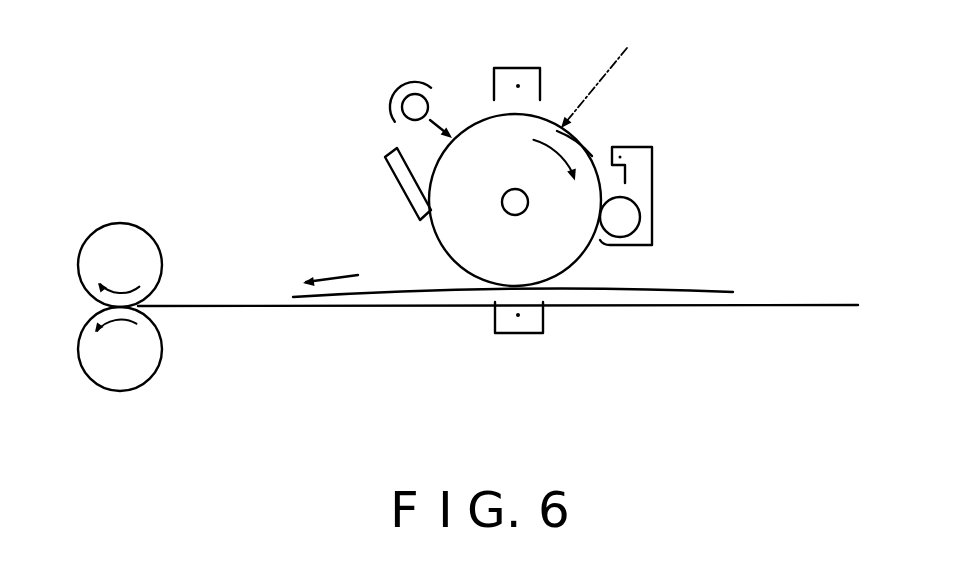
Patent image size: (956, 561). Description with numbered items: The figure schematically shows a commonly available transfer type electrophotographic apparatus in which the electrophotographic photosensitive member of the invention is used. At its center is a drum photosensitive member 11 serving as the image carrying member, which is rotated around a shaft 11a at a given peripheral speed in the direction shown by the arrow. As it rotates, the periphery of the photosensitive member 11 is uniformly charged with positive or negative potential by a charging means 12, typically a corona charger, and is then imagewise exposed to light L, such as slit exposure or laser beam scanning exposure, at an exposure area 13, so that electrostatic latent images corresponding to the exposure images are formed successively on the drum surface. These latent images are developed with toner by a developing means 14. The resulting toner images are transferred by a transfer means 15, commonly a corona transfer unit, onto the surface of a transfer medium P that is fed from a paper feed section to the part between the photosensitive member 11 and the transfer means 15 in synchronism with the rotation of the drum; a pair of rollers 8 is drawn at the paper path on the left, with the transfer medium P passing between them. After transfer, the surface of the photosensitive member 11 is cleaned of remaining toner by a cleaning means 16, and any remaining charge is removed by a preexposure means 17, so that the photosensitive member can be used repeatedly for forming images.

The feed rollers 8 is at (132, 223).
The transfer medium P is at (720, 291).
The drum photosensitive member 11 is at (437, 163).
The shaft 11a is at (514, 189).
The charging means 12 is at (513, 68).
The exposure area 13 is at (580, 147).
The developing means 14 is at (652, 182).
The transfer means 15 is at (518, 335).
The cleaning means 16 is at (390, 191).
The preexposure means 17 is at (395, 90).
The light L is at (597, 82).